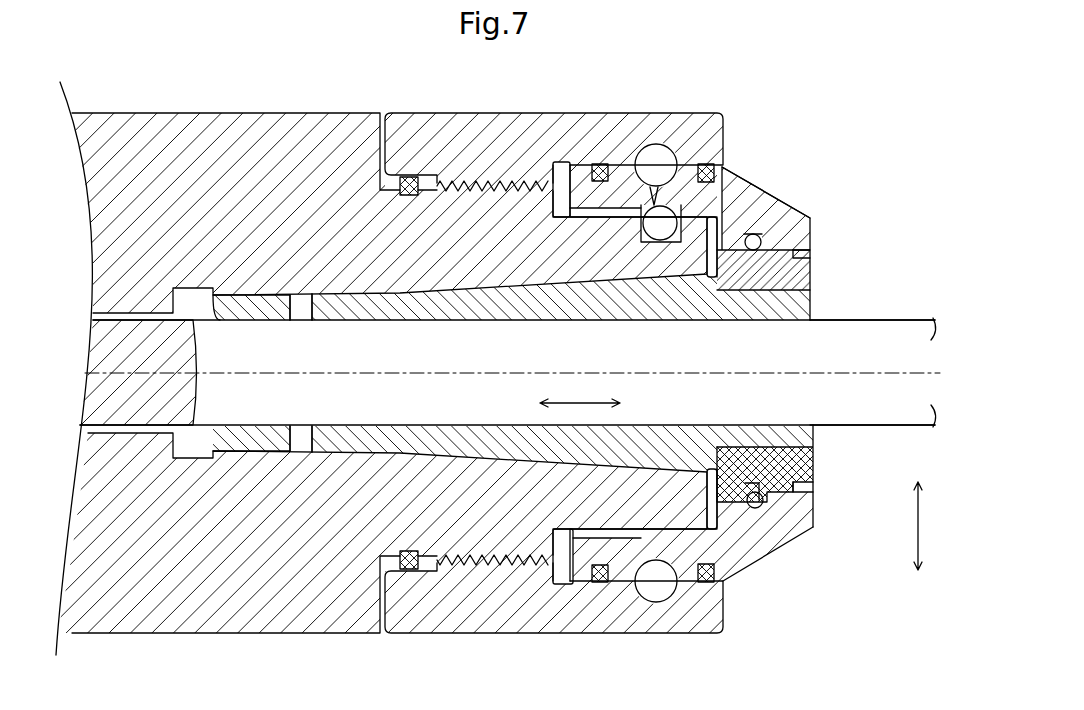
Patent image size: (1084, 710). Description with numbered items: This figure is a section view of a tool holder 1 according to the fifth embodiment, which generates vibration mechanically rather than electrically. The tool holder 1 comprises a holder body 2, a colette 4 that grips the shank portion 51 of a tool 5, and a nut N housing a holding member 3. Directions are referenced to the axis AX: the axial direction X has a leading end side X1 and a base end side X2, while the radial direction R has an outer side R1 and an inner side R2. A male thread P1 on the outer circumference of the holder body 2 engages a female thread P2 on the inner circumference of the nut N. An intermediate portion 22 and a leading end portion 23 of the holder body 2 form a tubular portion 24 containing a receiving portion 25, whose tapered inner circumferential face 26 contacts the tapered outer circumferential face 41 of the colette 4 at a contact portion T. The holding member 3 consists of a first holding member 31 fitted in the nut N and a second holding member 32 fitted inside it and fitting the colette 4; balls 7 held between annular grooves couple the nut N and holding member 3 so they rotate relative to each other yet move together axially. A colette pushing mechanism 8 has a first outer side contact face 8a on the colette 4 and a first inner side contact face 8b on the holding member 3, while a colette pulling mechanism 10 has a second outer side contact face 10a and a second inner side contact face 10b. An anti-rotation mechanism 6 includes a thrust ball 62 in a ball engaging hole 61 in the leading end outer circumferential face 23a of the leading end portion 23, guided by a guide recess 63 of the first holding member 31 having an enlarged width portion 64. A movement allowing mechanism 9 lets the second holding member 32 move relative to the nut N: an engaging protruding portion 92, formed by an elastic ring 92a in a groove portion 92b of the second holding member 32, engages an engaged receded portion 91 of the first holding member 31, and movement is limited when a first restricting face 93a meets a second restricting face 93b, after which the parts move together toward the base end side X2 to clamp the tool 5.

The tool holder 1 is at (890, 124).
The holder body 2 is at (158, 107).
The holding member 3 is at (808, 222).
The first holding member 31 is at (795, 205).
The second holding member 32 is at (812, 280).
The colette 4 is at (522, 320).
The tapered outer circumferential face 41 is at (587, 265).
The tool 5 is at (911, 314).
The shank portion 51 is at (366, 318).
The anti-rotation mechanism 6 is at (660, 208).
The ball engaging hole 61 is at (652, 250).
The thrust ball 62 is at (640, 243).
The guide recess 63 is at (602, 172).
The enlarged width portion 64 is at (562, 170).
The balls 7 is at (660, 158).
The colette pushing mechanism 8 is at (665, 396).
The first outer side contact face 8a is at (730, 424).
The first inner side contact face 8b is at (697, 424).
The movement allowing mechanism 9 is at (775, 205).
The engaged receded portion 91 is at (754, 234).
The first restricting face 93a is at (808, 260).
The second restricting face 93b is at (802, 252).
The engaging protruding portion 92 is at (765, 508).
The elastic ring 92a is at (812, 528).
The groove portion 92b is at (813, 480).
The colette pulling mechanism 10 is at (797, 378).
The second outer side contact face 10a is at (755, 425).
The second inner side contact face 10b is at (790, 425).
The intermediate portion 22 is at (433, 570).
The leading end portion 23 is at (772, 545).
The leading end outer circumferential face 23a is at (606, 588).
The tubular portion 24 is at (628, 601).
The receiving portion 25 is at (562, 604).
The tapered inner circumferential face 26 is at (525, 545).
The nut N is at (490, 112).
The male thread P1 is at (522, 183).
The female thread P2 is at (543, 183).
The contact portion T is at (490, 298).
The axial direction X is at (580, 391).
The axial direction leading end side X1 is at (641, 403).
The axial direction base end side X2 is at (519, 403).
The radial direction R is at (909, 526).
The radial direction outer side R1 is at (920, 583).
The radial direction inner side R2 is at (920, 469).
The axis AX is at (62, 378).